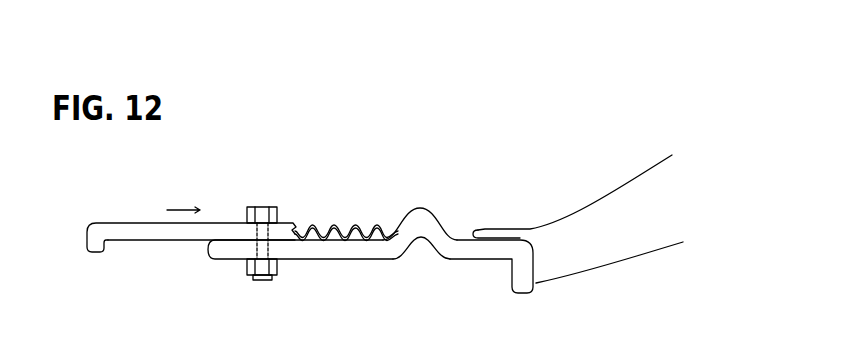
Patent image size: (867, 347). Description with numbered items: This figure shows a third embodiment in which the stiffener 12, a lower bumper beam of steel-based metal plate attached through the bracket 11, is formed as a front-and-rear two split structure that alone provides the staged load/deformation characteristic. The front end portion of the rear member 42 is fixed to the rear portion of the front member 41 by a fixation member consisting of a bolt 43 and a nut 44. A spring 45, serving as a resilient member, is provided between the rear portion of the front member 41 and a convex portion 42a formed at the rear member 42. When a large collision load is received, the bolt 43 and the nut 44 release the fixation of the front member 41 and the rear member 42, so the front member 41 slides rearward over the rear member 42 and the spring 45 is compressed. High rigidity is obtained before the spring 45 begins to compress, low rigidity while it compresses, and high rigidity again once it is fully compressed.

The bracket 11 is at (633, 243).
The stiffener 12 is at (364, 147).
The front member 41 is at (147, 233).
The rear member 42 is at (370, 243).
The convex portion 42a is at (423, 217).
The bolt 43 is at (261, 206).
The nut 44 is at (253, 270).
The spring 45 is at (355, 222).